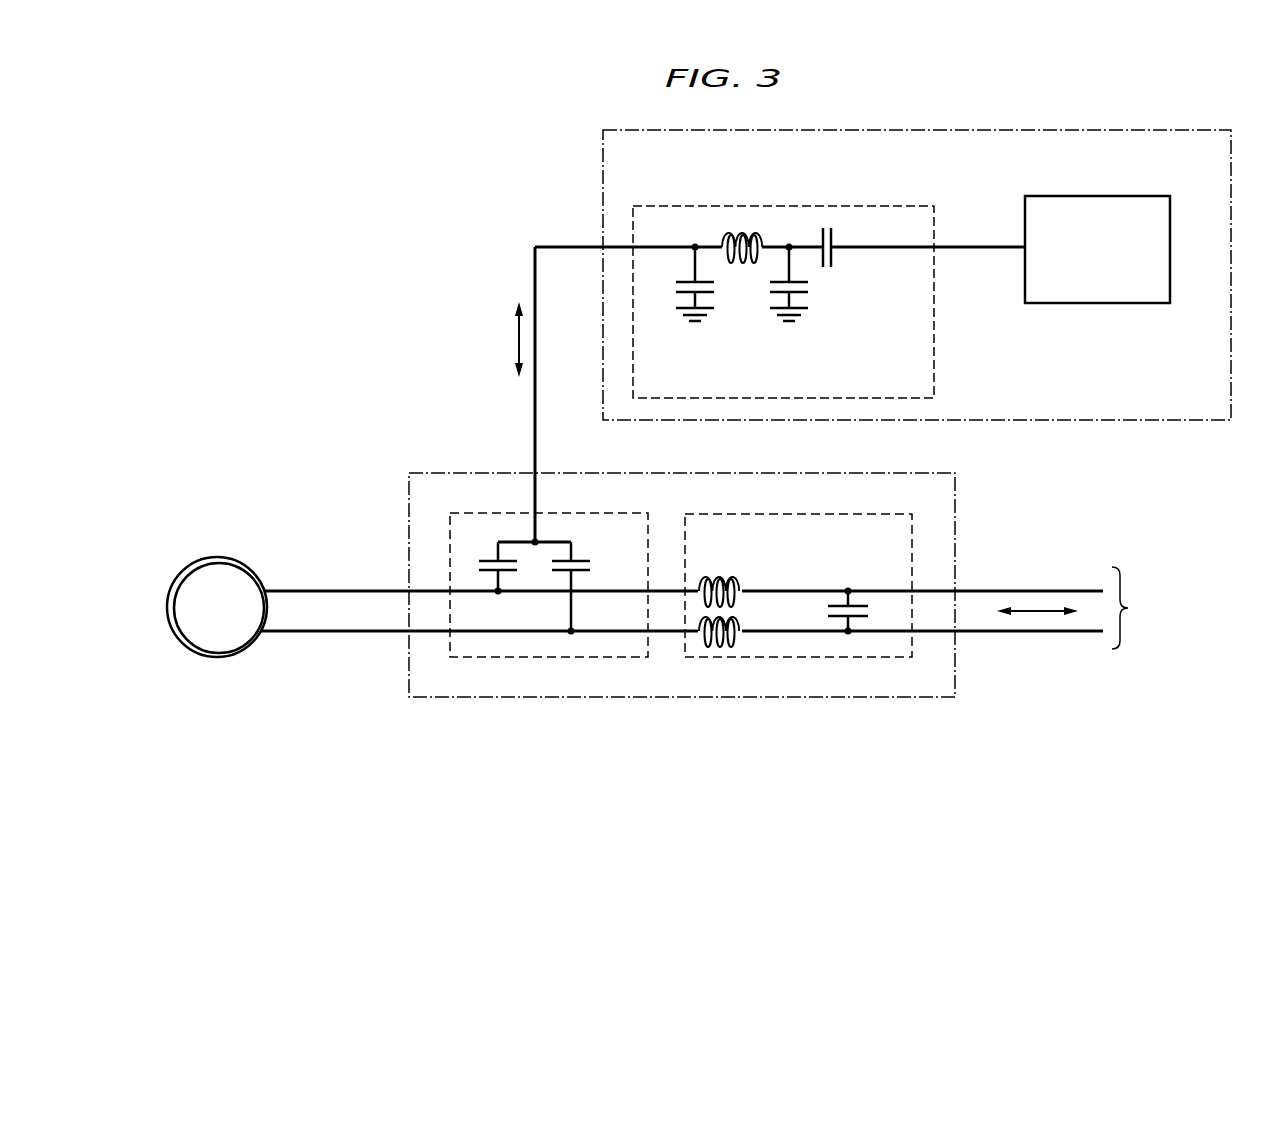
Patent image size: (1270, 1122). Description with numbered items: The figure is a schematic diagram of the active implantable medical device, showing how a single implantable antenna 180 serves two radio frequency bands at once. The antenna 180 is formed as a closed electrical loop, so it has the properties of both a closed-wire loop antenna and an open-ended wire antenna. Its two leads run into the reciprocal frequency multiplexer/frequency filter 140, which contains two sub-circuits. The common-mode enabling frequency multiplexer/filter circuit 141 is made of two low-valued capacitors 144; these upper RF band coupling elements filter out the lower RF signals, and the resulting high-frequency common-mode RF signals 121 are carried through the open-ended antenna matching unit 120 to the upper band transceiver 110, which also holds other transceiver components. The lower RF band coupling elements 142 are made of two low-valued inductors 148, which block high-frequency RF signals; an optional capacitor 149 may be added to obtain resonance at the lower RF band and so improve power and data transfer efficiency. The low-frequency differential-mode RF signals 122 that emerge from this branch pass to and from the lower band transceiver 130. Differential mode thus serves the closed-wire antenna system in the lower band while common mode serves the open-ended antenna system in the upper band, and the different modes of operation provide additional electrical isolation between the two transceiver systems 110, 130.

The upper band transceiver 110 is at (940, 130).
The open-ended antenna matching unit 120 is at (757, 206).
The high-frequency common-mode RF signals 121 is at (519, 340).
The low-frequency differential-mode RF signals 122 is at (1040, 611).
The lower band transceiver 130 is at (1191, 647).
The reciprocal frequency multiplexer/frequency filter 140 is at (409, 668).
The common-mode enabling frequency multiplexer/filter circuit 141 is at (547, 682).
The lower RF band coupling elements 142 is at (806, 682).
The capacitors 144 is at (522, 565).
The inductors 148 is at (748, 620).
The capacitor 149 is at (872, 608).
The implantable antenna 180 is at (180, 643).